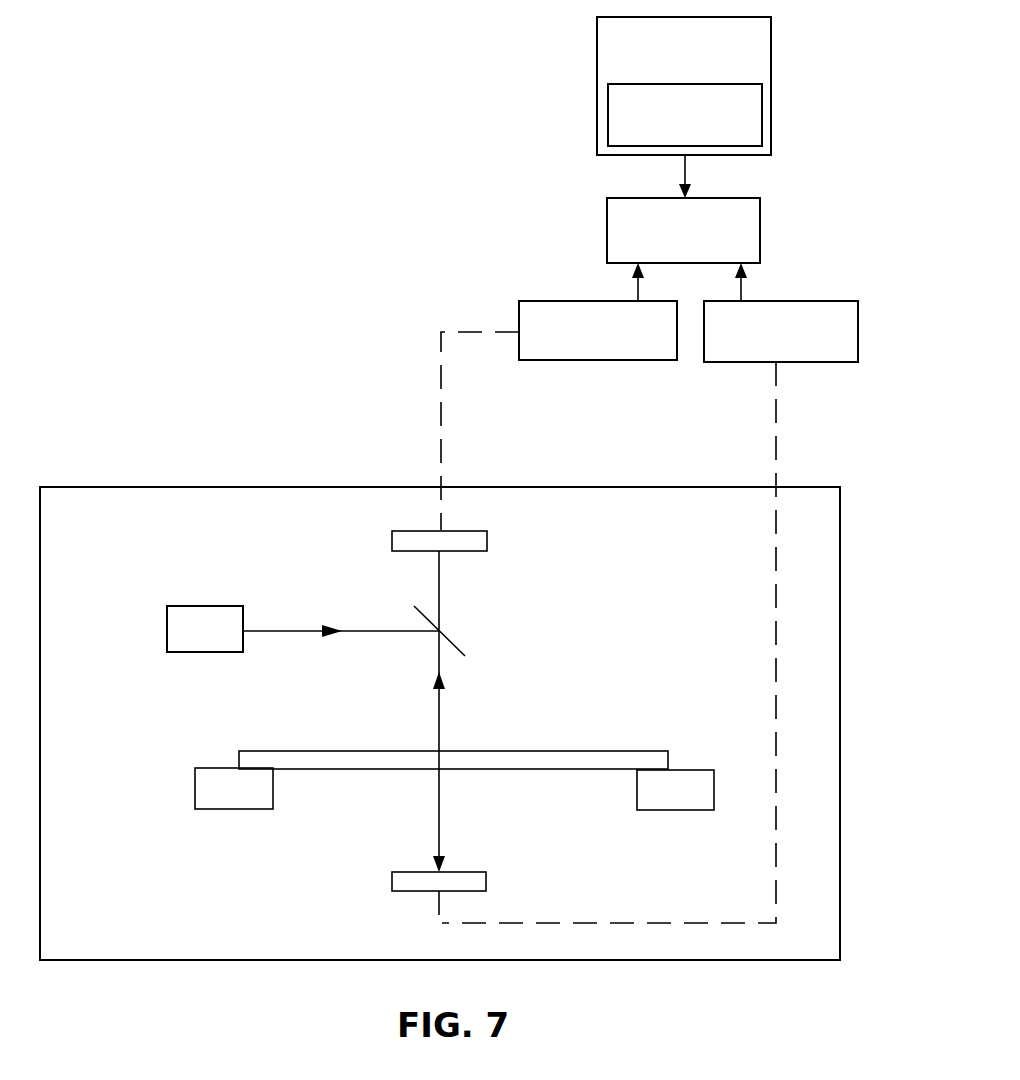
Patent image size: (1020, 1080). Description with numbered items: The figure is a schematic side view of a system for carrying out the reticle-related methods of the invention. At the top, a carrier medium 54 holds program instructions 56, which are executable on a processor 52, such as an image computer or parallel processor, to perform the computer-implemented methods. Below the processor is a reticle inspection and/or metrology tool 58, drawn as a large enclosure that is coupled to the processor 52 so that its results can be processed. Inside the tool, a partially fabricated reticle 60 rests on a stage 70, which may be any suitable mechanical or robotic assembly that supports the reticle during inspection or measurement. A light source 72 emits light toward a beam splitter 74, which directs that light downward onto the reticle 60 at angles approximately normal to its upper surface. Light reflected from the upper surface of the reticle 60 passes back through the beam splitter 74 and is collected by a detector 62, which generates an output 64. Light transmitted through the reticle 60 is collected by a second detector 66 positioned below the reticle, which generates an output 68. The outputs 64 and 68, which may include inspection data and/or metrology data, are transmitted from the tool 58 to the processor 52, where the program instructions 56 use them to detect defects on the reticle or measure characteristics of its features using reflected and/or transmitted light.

The processor 52 is at (761, 234).
The carrier medium 54 is at (772, 53).
The program instructions 56 is at (763, 115).
The reticle inspection and/or metrology tool 58 is at (840, 505).
The partially fabricated reticle 60 is at (650, 752).
The detector 62 is at (488, 540).
The output 64 is at (518, 315).
The detector 66 is at (486, 883).
The output 68 is at (859, 337).
The stage 70 is at (220, 804).
The light source 72 is at (166, 627).
The beam splitter 74 is at (448, 642).